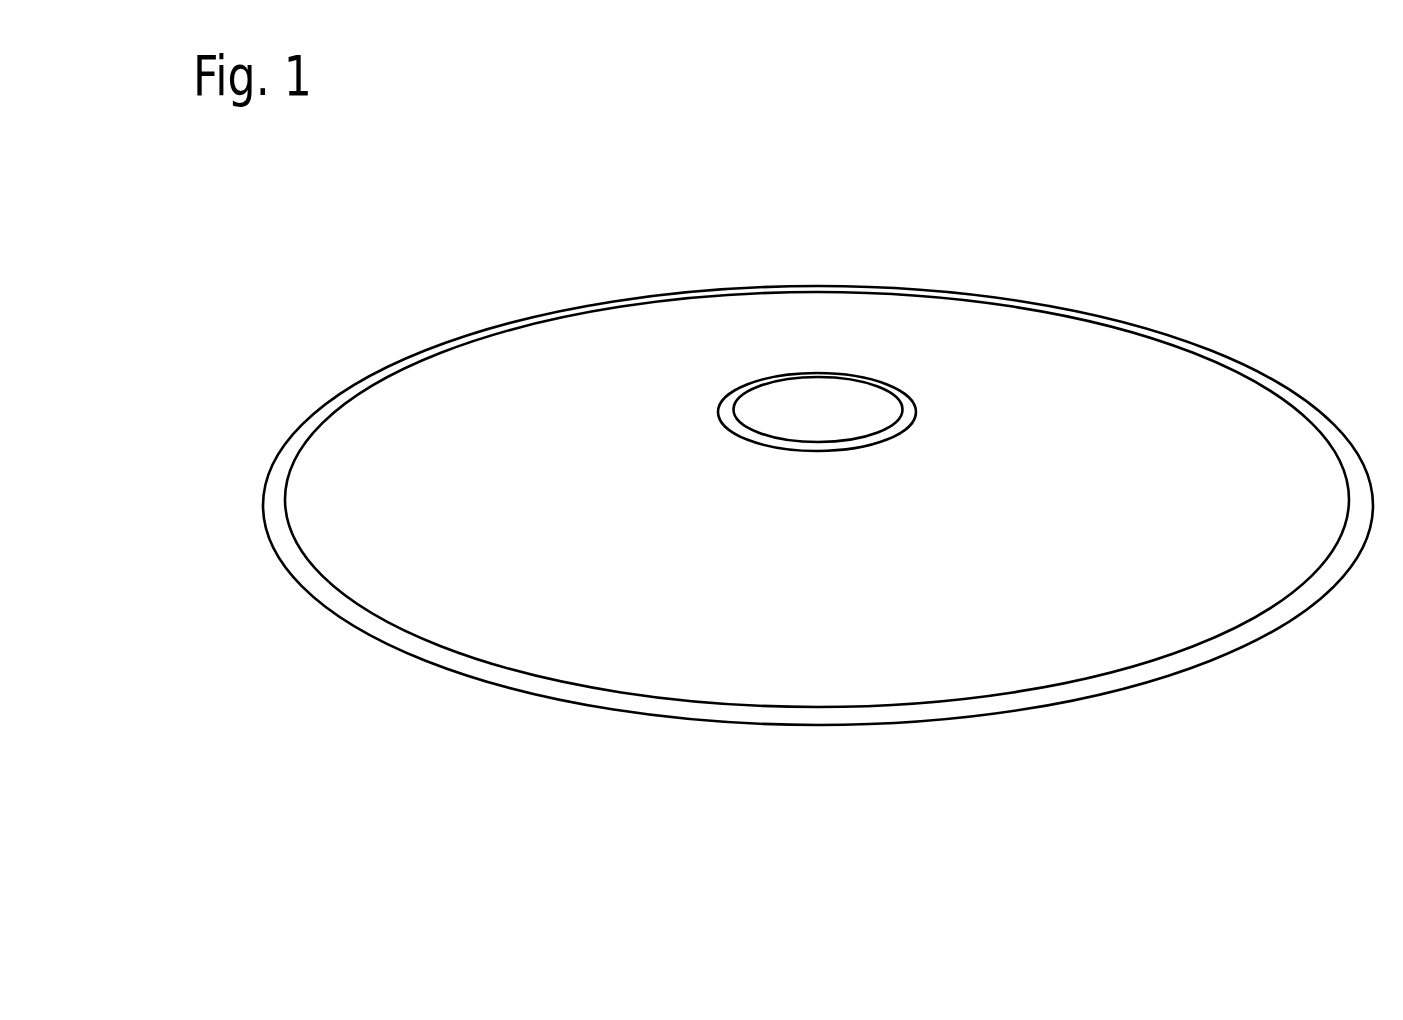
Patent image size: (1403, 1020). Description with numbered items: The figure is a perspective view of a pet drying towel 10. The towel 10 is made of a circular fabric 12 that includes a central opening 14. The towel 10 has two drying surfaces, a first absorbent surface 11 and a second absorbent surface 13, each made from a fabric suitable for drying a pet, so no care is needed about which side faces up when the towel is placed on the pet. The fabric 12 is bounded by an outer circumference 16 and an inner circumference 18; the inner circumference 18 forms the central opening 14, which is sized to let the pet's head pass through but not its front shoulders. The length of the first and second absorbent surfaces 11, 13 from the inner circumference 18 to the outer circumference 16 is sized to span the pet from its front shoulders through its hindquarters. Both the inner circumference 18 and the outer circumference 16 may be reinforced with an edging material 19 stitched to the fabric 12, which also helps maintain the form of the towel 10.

The pet drying towel 10 is at (527, 277).
The first absorbent surface 11 is at (572, 623).
The circular fabric 12 is at (374, 578).
The second absorbent surface 13 is at (659, 335).
The central opening 14 is at (823, 423).
The outer circumference 16 is at (902, 724).
The inner circumference 18 is at (915, 419).
The edging material 19 is at (727, 414).